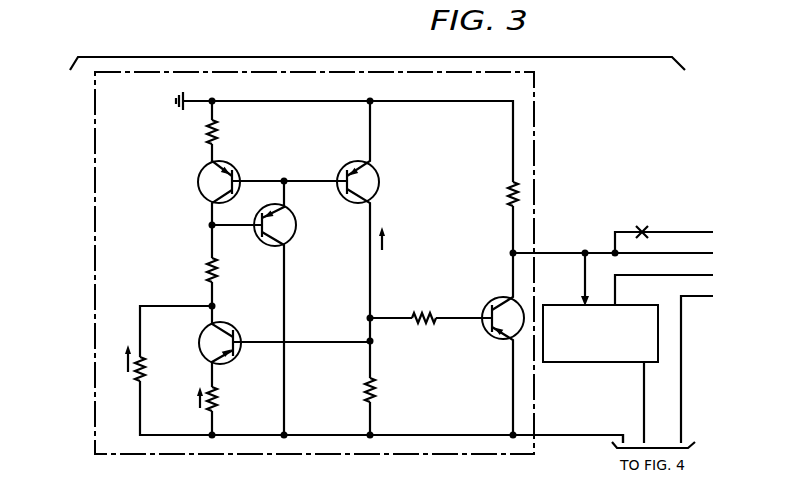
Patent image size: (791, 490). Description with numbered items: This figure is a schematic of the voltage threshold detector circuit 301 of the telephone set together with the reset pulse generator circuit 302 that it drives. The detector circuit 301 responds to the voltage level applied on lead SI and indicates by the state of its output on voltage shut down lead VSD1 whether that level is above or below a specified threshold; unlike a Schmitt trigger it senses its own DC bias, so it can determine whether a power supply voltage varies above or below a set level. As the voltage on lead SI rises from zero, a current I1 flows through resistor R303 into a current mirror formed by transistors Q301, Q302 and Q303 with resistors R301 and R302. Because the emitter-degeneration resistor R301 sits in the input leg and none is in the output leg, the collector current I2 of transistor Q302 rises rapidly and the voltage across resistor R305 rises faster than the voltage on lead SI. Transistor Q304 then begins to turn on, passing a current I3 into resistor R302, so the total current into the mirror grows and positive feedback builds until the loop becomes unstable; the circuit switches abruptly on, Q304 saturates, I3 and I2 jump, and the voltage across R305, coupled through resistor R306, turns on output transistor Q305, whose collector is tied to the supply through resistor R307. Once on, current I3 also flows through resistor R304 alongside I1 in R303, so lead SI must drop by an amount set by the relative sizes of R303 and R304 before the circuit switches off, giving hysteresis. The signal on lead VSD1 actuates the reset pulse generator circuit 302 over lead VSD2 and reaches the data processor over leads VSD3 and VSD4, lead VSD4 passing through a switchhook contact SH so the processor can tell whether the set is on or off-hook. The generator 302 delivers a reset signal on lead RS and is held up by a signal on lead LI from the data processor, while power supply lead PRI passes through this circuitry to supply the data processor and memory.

The voltage threshold detector circuit 301 is at (93, 148).
The reset pulse generator circuit 302 is at (595, 363).
The emitter-degeneration resistor R301 is at (234, 132).
The resistor R302 is at (192, 270).
The resistor R303 is at (162, 369).
The resistor R304 is at (234, 399).
The resistor R305 is at (393, 390).
The resistor R306 is at (426, 307).
The resistor R307 is at (491, 194).
The transistor Q301 is at (201, 178).
The transistor Q302 is at (377, 178).
The transistor Q303 is at (293, 228).
The transistor Q304 is at (232, 335).
The output transistor Q305 is at (497, 307).
The current I1 is at (120, 365).
The collector current I2 is at (391, 243).
The current I3 is at (193, 399).
The voltage shut down lead VSD1 is at (611, 252).
The lead VSD2 is at (582, 272).
The lead VSD3 is at (666, 241).
The lead VSD4 is at (691, 229).
The switchhook contact SH is at (643, 227).
The reset lead RS is at (621, 275).
The power supply output lead PRI is at (677, 299).
The lead SI is at (602, 431).
The lead LI is at (653, 415).